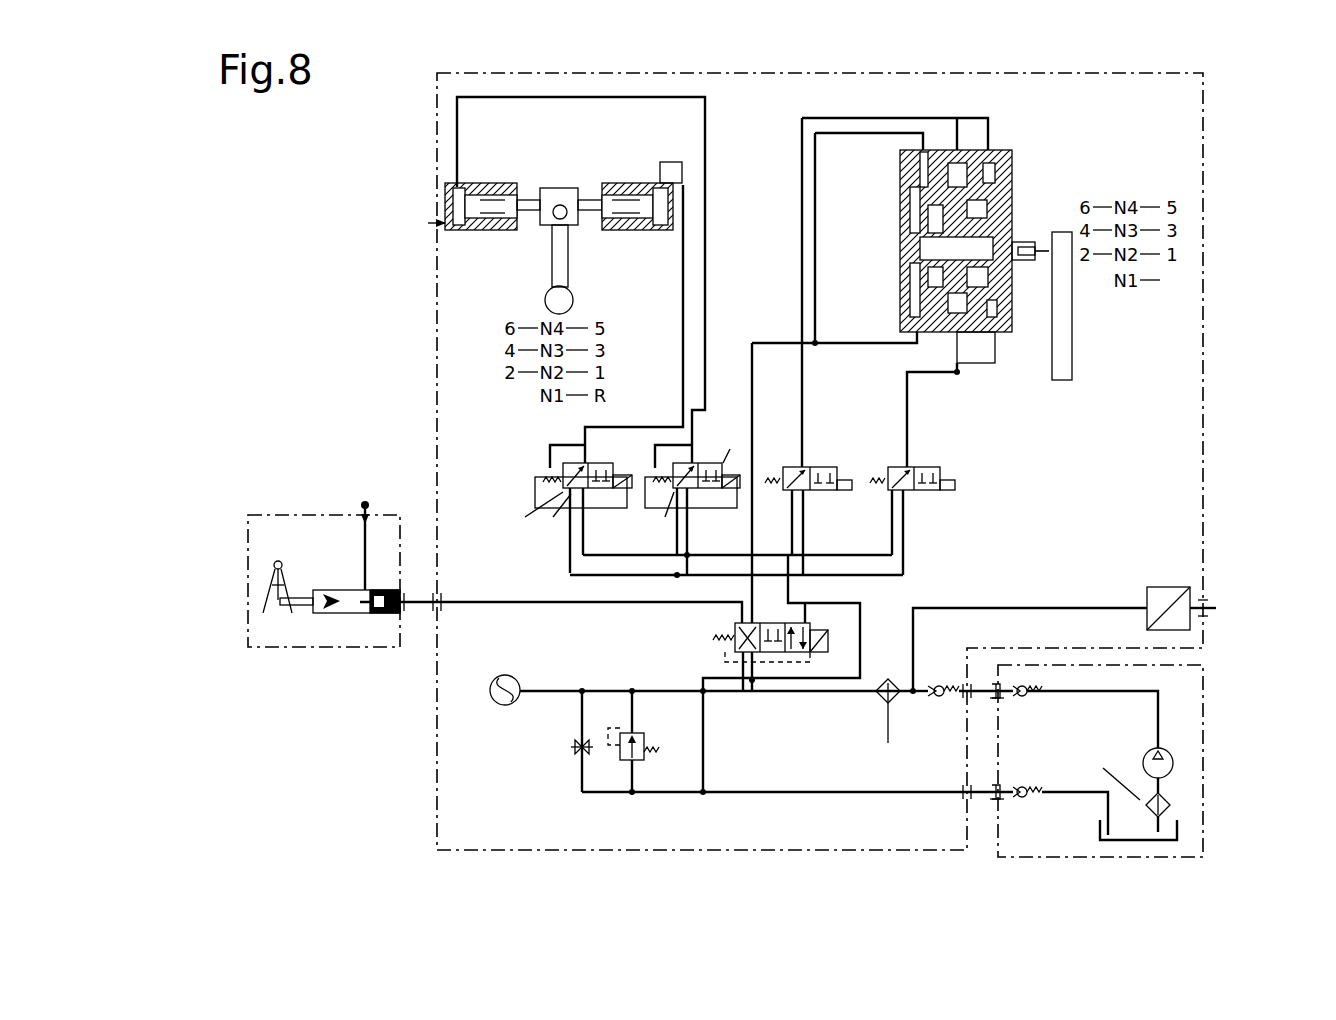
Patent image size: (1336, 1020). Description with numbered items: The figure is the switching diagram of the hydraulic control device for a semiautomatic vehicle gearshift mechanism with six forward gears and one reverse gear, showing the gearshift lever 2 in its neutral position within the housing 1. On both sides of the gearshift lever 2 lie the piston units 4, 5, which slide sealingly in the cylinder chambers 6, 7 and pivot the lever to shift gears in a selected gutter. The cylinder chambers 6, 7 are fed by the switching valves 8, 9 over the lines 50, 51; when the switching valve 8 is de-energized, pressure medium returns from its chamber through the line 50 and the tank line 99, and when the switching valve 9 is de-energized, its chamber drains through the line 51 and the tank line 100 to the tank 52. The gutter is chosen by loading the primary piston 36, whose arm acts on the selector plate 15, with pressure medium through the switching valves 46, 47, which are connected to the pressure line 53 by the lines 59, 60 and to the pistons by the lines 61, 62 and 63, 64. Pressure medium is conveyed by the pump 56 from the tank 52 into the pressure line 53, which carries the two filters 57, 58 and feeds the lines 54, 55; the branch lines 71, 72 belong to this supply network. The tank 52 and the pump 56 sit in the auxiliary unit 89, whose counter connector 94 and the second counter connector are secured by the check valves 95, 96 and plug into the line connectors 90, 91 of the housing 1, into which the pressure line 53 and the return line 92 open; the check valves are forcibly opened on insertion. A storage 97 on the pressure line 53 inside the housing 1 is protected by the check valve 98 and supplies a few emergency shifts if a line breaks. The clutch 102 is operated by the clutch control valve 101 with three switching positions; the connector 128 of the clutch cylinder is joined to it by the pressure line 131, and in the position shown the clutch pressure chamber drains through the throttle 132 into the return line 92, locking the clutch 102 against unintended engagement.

The housing 1 is at (1203, 113).
The gearshift lever 2 is at (548, 188).
The piston unit 4 is at (428, 223).
The piston unit 5 is at (647, 184).
The cylinder chamber 6 is at (453, 200).
The cylinder chamber 7 is at (668, 182).
The switching valve 8 is at (530, 470).
The switching valve 9 is at (650, 463).
The shift finger / selector plate 15 is at (546, 295).
The primary piston 36 is at (556, 243).
The switching valve 46 is at (822, 467).
The switching valve 47 is at (925, 464).
The line 50 is at (583, 435).
The line 51 is at (706, 205).
The tank 52 is at (1173, 828).
The pressure line 53 is at (740, 655).
The line 54 is at (603, 557).
The line 55 is at (678, 573).
The pump 56 is at (1168, 761).
The filter 57 is at (1166, 804).
The filter 58 is at (863, 727).
The line 59 is at (803, 540).
The line 60 is at (907, 549).
The line 61 is at (827, 132).
The line 62 is at (957, 150).
The line 63 is at (843, 343).
The line 64 is at (995, 347).
The return line 71 is at (790, 513).
The pressure supply line 72 is at (903, 574).
The auxiliary unit 89 is at (1212, 847).
The line connector 90 is at (963, 698).
The line connector 91 is at (965, 795).
The return line 92 is at (647, 793).
The counter connector 94 is at (997, 800).
The check valve 95 is at (1010, 683).
The check valve 96 is at (1021, 800).
The storage 97 is at (500, 703).
The check valve 98 is at (940, 685).
The tank line 99 is at (570, 544).
The tank line 100 is at (677, 540).
The clutch control valve 101 is at (780, 664).
The clutch 102 is at (243, 580).
The connector 128 is at (363, 615).
The pressure line 131 is at (463, 603).
The throttle 132 is at (703, 770).